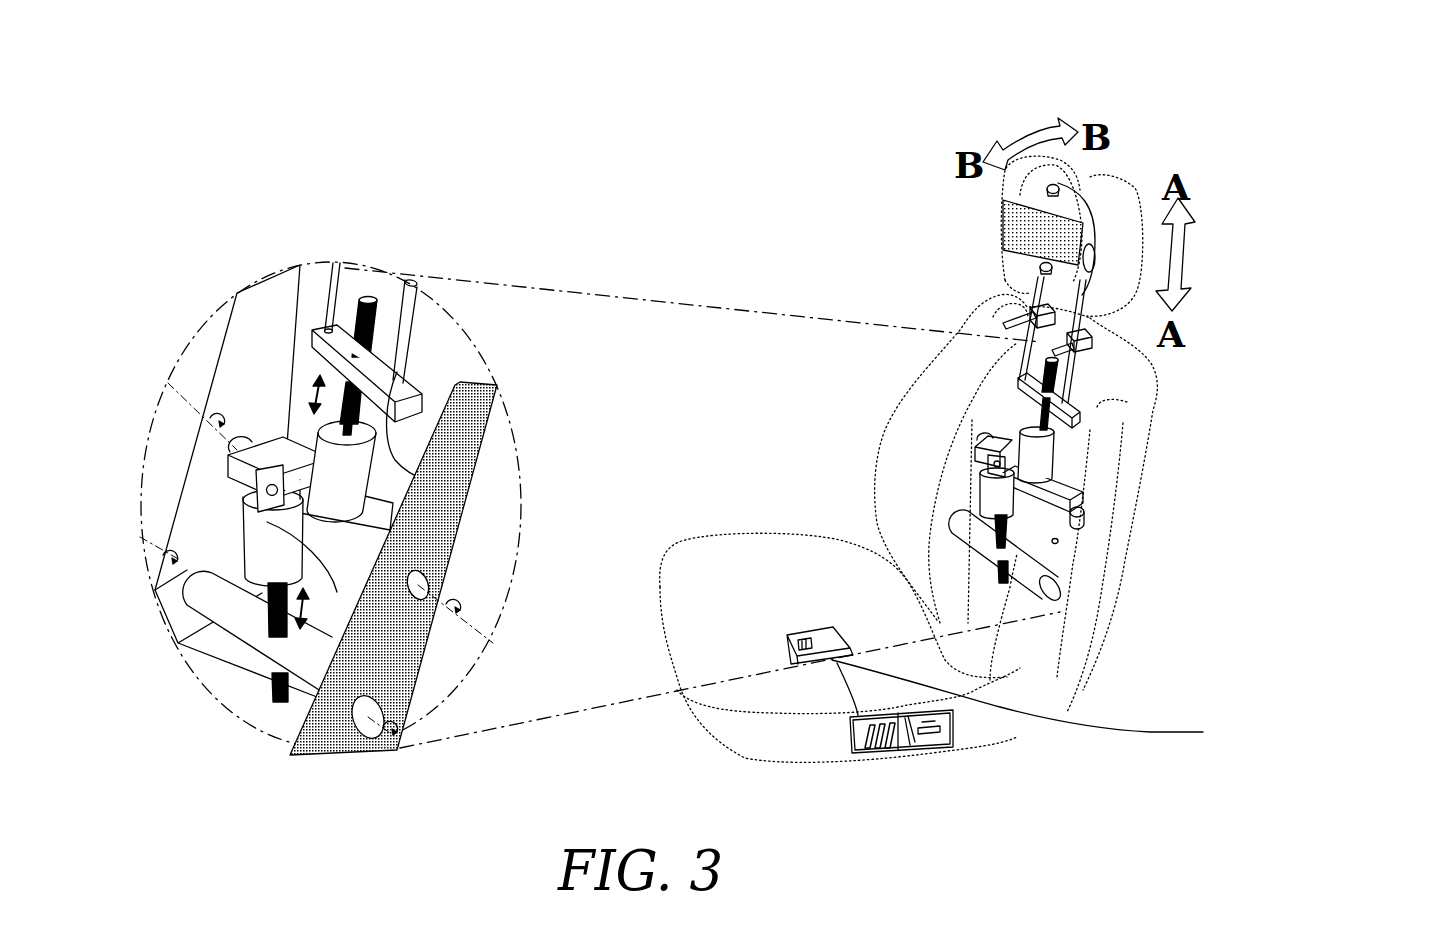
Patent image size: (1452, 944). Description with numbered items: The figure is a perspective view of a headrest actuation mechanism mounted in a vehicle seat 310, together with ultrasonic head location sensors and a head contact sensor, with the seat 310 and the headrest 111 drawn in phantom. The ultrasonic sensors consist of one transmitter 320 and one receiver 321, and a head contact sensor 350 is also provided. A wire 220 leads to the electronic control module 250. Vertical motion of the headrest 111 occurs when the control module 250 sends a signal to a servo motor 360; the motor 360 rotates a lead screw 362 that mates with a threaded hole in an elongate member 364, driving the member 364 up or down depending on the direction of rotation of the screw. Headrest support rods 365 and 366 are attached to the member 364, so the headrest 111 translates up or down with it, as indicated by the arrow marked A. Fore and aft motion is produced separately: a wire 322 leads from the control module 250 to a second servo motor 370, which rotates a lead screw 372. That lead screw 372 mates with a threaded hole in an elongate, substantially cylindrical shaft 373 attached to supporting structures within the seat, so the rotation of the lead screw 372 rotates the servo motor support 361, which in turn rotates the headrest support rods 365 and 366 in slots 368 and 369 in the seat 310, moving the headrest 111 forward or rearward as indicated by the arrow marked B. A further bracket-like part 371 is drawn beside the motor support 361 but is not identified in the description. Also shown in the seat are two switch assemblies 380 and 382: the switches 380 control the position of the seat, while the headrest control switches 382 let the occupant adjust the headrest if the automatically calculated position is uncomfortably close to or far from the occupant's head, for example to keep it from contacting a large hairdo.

The headrest 111 is at (1117, 210).
The head contact sensor 350 is at (1040, 232).
The receiver 321 is at (1047, 190).
The transmitter 320 is at (1040, 267).
The slot 368 is at (1005, 322).
The slot 369 is at (1040, 348).
The headrest support rod 365 is at (1027, 363).
The headrest support rod 366 is at (1018, 380).
The lead screw 362 is at (1067, 372).
The elongate member 364 is at (1072, 423).
The servo motor 360 is at (1043, 453).
The servo motor support 361 is at (1065, 489).
The pivot bracket 371 is at (1080, 514).
The servo motor 370 is at (997, 503).
The lead screw 372 is at (990, 528).
The elongate substantially cylindrical shaft 373 is at (1055, 588).
The wire 322 is at (1055, 542).
The vehicle seat 310 is at (1030, 642).
The wire 220 is at (1150, 735).
The electronic control module 250 is at (790, 660).
The switch assembly 380 is at (880, 753).
The headrest control switch assembly 382 is at (917, 747).